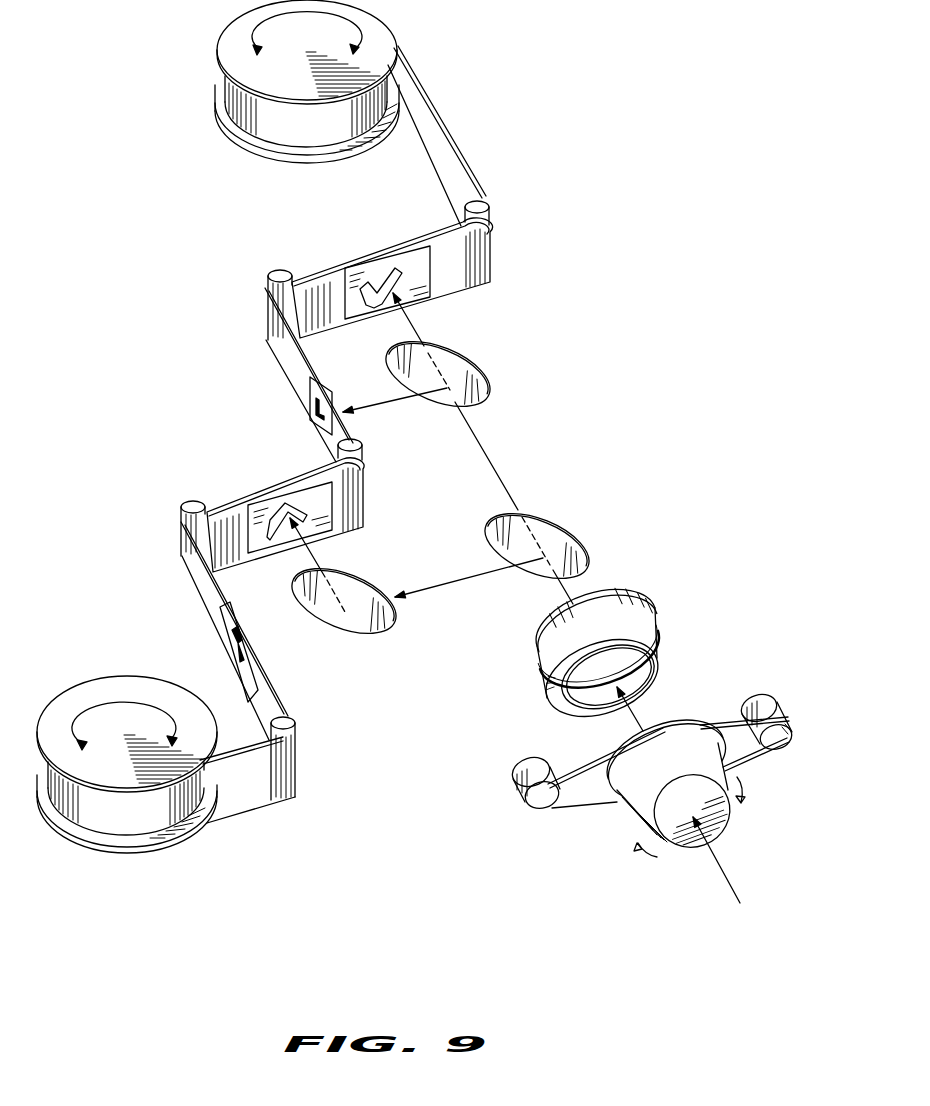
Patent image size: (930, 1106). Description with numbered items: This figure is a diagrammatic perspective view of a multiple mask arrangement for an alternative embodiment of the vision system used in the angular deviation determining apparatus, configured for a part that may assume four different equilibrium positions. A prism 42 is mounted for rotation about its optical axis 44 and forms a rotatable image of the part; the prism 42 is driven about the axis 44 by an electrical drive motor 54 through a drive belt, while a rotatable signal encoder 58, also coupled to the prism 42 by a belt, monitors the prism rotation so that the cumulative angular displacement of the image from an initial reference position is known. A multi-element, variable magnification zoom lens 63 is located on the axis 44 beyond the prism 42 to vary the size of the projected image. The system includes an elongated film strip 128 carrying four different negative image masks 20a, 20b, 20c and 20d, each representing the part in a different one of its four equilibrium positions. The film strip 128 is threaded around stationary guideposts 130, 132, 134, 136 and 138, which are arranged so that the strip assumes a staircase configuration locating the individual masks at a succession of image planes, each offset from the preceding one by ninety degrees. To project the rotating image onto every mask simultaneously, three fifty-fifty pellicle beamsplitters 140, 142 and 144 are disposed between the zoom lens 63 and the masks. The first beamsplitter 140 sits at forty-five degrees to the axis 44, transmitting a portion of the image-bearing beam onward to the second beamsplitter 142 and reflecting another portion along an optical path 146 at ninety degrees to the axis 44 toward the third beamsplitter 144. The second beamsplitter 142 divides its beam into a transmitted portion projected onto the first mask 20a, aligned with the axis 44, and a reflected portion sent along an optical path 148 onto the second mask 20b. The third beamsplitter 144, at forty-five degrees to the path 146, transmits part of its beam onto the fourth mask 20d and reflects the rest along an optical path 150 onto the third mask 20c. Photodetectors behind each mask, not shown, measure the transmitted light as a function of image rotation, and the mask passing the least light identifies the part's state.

The first mask 20a is at (420, 274).
The second mask 20b is at (308, 392).
The third mask 20c is at (318, 512).
The fourth mask 20d is at (220, 627).
The prism 42 is at (633, 813).
The optical axis 44 is at (556, 597).
The electrical drive motor 54 is at (755, 705).
The rotatable signal encoder 58 is at (516, 777).
The zoom lens 63 is at (542, 674).
The film strip 128 is at (243, 808).
The guidepost 130 is at (293, 718).
The guidepost 132 is at (190, 503).
The guidepost 134 is at (362, 446).
The guidepost 136 is at (278, 270).
The guidepost 138 is at (482, 207).
The first beamsplitter 140 is at (567, 522).
The second beamsplitter 142 is at (478, 358).
The third beamsplitter 144 is at (397, 619).
The optical path 146 is at (480, 567).
The optical path 148 is at (386, 402).
The optical path 150 is at (318, 566).